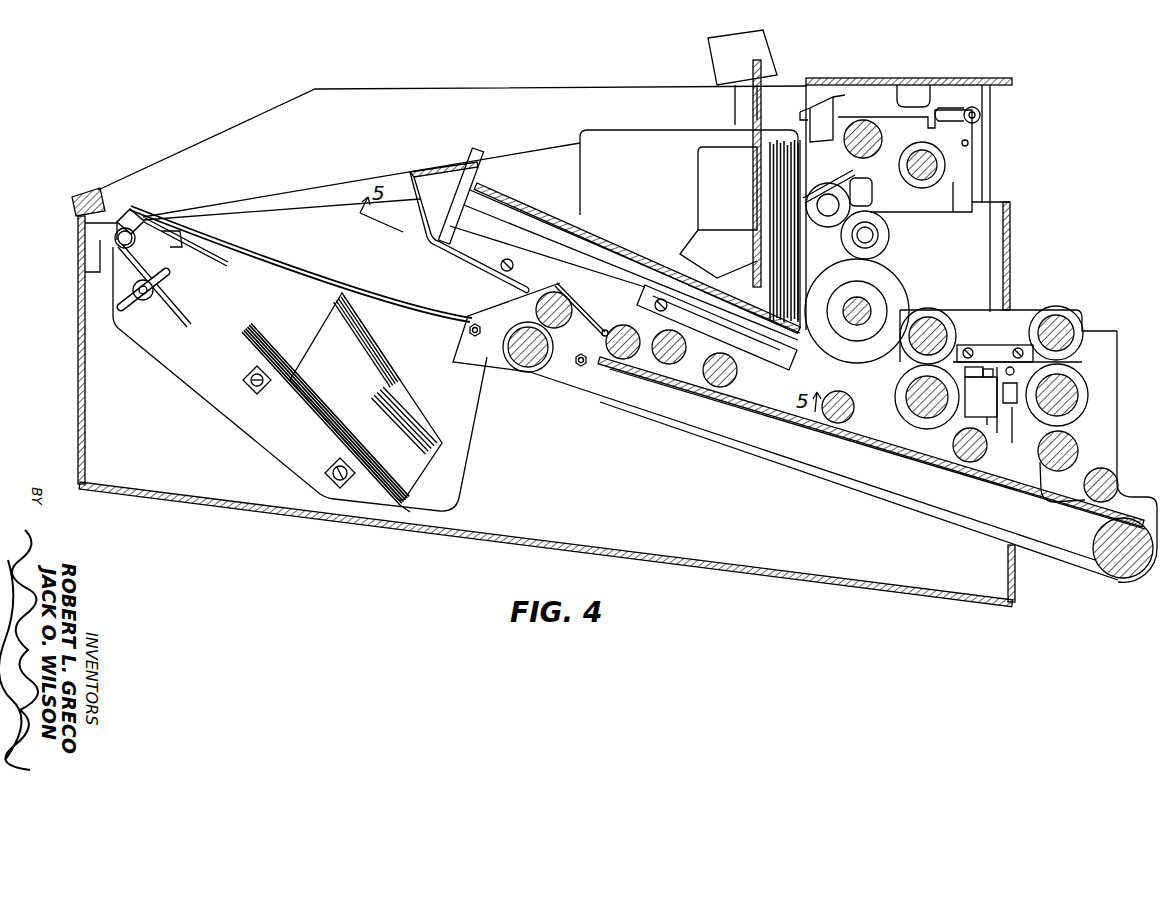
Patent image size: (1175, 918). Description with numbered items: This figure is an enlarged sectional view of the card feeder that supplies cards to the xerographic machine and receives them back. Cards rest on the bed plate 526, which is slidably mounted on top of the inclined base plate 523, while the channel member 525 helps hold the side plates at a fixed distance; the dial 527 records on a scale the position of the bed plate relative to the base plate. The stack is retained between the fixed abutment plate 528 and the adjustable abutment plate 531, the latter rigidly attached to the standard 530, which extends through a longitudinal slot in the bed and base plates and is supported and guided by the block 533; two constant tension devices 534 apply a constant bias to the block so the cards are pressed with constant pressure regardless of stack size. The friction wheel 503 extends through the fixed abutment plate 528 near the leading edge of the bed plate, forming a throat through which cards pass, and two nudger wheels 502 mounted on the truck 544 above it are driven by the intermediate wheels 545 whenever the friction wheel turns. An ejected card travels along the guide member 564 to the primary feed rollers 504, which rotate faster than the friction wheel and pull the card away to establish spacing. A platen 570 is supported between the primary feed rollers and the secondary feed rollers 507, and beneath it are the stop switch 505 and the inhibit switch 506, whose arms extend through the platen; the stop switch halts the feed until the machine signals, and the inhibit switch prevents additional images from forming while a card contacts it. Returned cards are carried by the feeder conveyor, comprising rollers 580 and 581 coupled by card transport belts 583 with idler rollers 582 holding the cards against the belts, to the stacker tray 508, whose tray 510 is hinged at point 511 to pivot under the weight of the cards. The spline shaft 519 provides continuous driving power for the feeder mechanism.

The nudger wheels 502 is at (823, 188).
The friction wheel 503 is at (885, 305).
The primary feed rollers 504 is at (900, 413).
The stop switch 505 is at (952, 452).
The inhibit switch 506 is at (1012, 440).
The secondary feed rollers 507 is at (1088, 388).
The stacker tray 508 is at (257, 313).
The tray 510 is at (325, 422).
The hinge point 511 is at (140, 216).
The spline shaft 519 is at (1078, 446).
The base plate 523 is at (517, 213).
The channel member 525 is at (432, 160).
The bed plate 526 is at (533, 205).
The dial 527 is at (472, 153).
The fixed abutment plate 528 is at (800, 110).
The standard 530 is at (686, 248).
The adjustable abutment plate 531 is at (753, 135).
The block 533 is at (575, 300).
The constant tension devices 534 is at (762, 365).
The truck 544 is at (870, 190).
The intermediate wheels 545 is at (890, 235).
The guide member 564 is at (798, 395).
The platen 570 is at (992, 362).
The conveyor roller 580 is at (1157, 565).
The conveyor roller 581 is at (533, 375).
The idler rollers 582 is at (664, 364).
The card transport belts 583 is at (1000, 533).